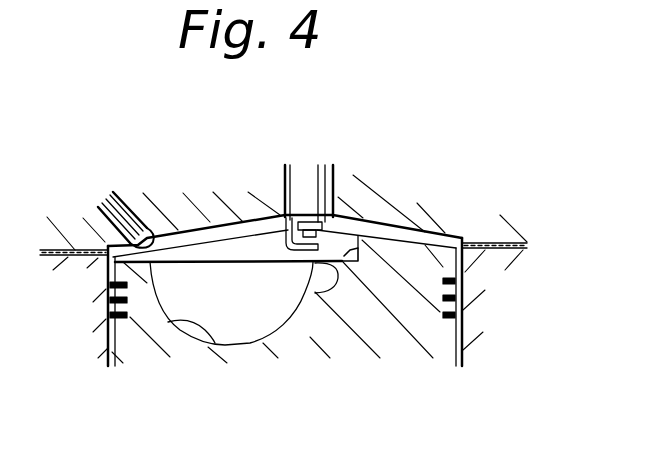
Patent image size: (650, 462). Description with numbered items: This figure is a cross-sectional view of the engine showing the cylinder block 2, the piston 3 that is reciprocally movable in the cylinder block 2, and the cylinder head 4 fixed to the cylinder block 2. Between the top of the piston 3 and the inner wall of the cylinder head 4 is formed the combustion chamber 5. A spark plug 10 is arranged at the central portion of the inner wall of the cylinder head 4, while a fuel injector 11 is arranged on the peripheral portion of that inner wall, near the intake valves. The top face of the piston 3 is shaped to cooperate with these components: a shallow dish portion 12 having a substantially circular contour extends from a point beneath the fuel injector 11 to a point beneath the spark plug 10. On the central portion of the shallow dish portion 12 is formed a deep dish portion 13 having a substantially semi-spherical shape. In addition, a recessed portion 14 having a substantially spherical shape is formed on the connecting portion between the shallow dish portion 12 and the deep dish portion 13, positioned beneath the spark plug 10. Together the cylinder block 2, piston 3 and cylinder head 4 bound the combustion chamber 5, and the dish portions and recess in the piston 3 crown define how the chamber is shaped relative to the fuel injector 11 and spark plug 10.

The cylinder block 2 is at (475, 345).
The piston 3 is at (437, 333).
The cylinder head 4 is at (450, 222).
The combustion chamber 5 is at (213, 228).
The spark plug 10 is at (285, 184).
The fuel injector 11 is at (117, 215).
The shallow dish portion 12 is at (357, 240).
The deep dish portion 13 is at (170, 325).
The recessed portion 14 is at (337, 277).